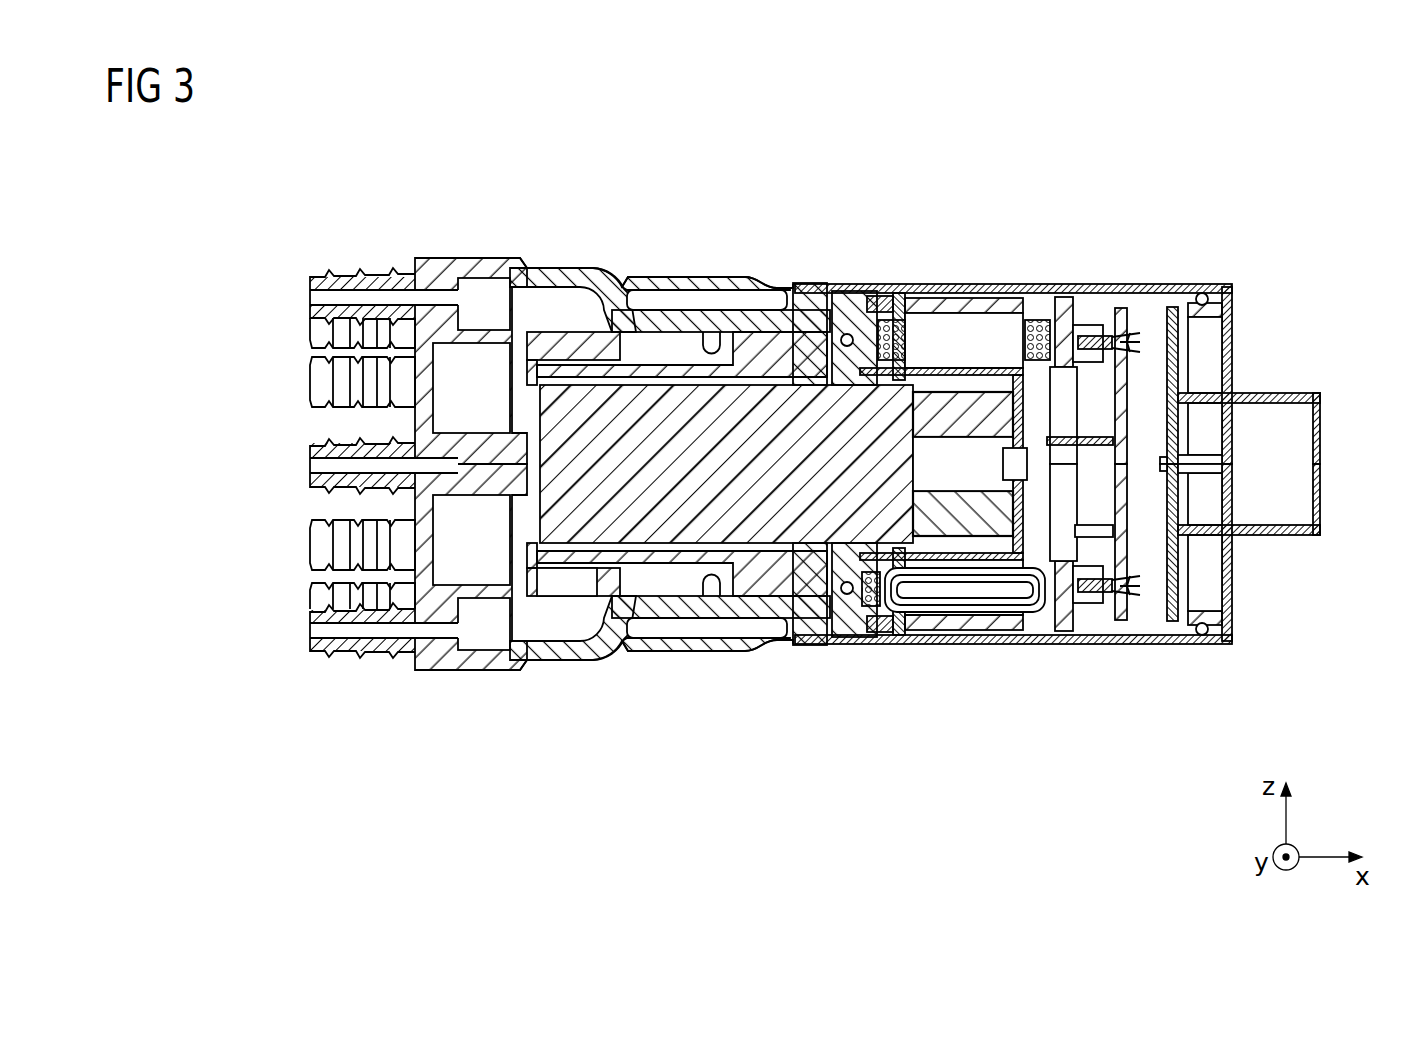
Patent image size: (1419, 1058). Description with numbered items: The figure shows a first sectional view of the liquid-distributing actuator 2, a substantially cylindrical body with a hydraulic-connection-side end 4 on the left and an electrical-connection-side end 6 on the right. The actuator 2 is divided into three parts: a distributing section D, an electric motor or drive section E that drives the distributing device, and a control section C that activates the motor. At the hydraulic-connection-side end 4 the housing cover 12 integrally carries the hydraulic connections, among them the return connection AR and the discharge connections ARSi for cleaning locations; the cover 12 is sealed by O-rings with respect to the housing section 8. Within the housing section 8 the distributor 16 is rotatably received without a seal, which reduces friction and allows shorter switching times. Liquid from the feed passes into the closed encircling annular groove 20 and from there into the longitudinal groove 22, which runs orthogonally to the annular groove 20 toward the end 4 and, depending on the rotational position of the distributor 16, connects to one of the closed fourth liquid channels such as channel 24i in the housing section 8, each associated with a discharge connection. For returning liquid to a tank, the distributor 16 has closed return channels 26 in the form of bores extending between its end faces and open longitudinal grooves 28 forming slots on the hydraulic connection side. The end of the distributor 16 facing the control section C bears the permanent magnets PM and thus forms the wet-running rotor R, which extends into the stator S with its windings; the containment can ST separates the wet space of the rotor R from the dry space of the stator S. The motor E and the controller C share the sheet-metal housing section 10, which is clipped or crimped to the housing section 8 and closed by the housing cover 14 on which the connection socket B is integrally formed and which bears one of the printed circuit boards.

The liquid-distributing actuator 2 is at (851, 130).
The hydraulic-connection-side end 4 is at (184, 368).
The electrical-connection-side end 6 is at (1349, 337).
The housing section 8 is at (657, 320).
The housing section 10 is at (1153, 282).
The housing cover 12 is at (418, 258).
The housing cover 14 is at (1225, 338).
The distributor 16 is at (784, 478).
The annular groove 20 is at (710, 330).
The longitudinal groove 22 is at (620, 345).
The fourth liquid channel 24i is at (550, 300).
The liquid channel 26 is at (750, 375).
The longitudinal groove 28 is at (608, 598).
The containment can ST is at (860, 290).
The stator S is at (940, 330).
The rotor R is at (975, 408).
The permanent magnets PM is at (957, 540).
The connection socket B is at (1285, 466).
The control section C is at (1120, 697).
The distributing section D is at (670, 718).
The drive section E is at (917, 742).
The discharge connection ARSi is at (325, 300).
The return connection AR is at (322, 465).